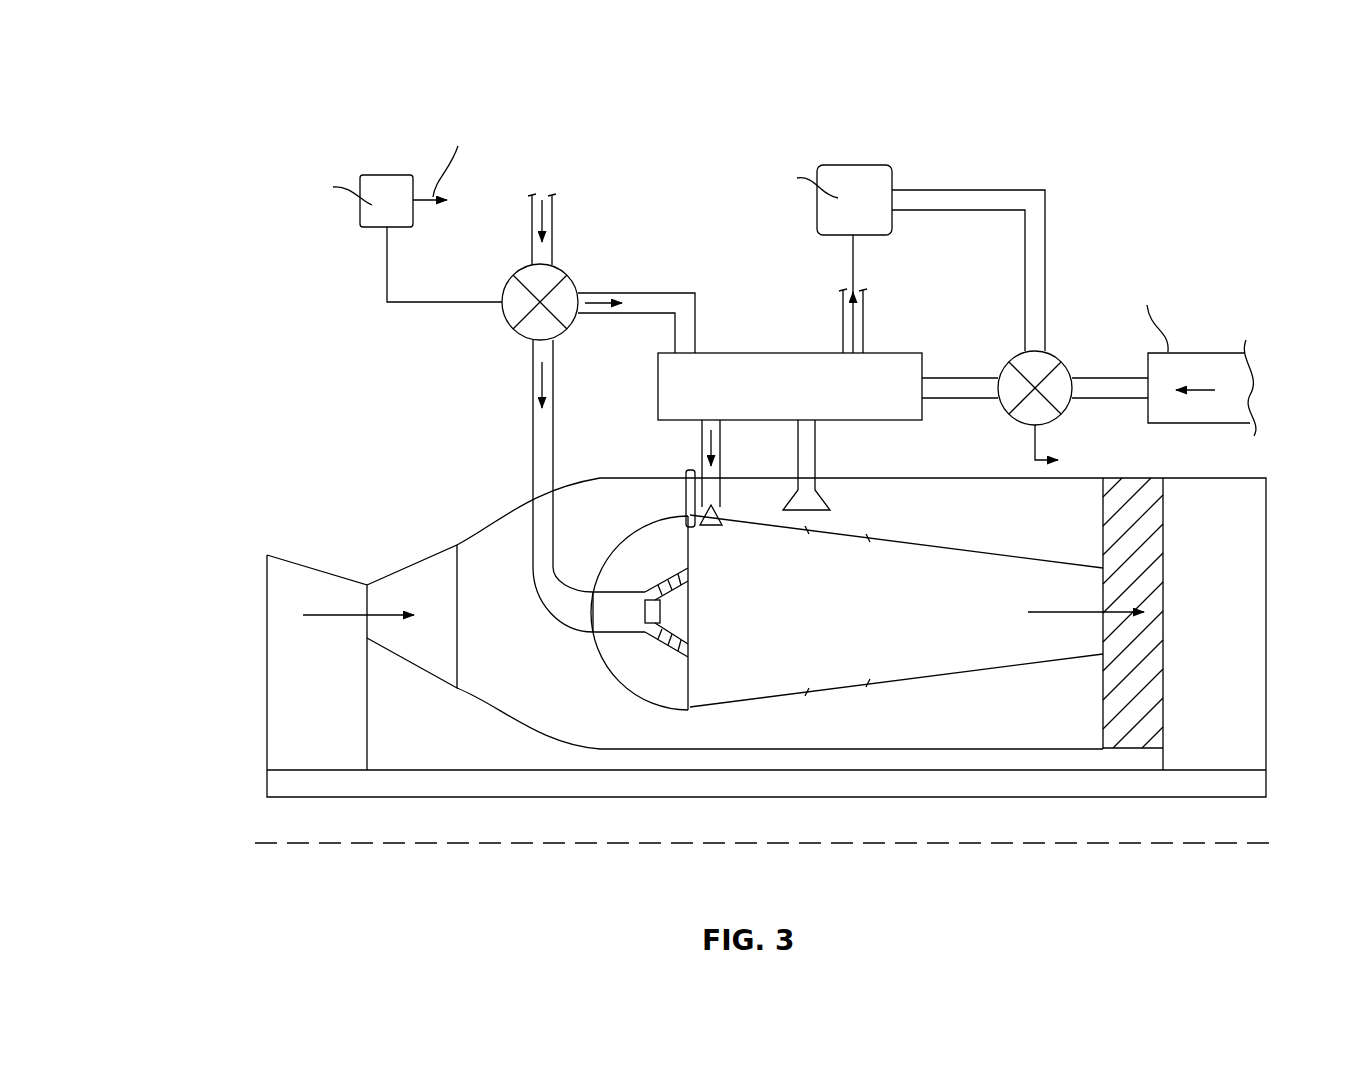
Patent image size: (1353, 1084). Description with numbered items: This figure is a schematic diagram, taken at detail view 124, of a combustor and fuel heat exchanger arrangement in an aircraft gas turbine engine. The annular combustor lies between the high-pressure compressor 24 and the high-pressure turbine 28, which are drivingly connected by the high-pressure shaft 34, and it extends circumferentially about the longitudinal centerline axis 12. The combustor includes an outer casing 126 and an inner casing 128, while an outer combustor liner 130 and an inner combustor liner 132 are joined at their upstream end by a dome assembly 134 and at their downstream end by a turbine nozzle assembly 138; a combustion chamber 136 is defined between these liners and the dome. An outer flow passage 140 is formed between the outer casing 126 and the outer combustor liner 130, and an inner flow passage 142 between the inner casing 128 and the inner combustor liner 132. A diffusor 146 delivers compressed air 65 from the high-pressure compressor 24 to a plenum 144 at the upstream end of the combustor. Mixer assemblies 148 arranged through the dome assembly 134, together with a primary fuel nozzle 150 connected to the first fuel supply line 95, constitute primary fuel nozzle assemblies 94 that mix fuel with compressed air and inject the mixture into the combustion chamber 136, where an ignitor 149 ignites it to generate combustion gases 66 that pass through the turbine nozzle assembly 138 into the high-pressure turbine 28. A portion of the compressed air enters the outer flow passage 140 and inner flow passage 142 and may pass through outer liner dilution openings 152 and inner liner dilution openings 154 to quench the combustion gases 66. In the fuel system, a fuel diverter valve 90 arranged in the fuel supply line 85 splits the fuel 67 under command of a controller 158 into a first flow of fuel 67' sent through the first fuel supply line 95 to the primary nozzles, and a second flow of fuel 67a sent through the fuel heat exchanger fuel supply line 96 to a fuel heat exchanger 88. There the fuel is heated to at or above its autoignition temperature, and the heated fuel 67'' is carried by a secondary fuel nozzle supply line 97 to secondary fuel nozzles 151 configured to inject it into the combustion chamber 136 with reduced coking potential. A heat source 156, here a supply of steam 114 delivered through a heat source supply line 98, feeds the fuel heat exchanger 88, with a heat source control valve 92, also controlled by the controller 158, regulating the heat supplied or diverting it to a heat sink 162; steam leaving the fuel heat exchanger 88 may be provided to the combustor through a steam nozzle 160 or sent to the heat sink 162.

The detail view 124 is at (158, 84).
The controller 158 is at (387, 173).
The fuel supply line 85 is at (556, 210).
The fuel 67 is at (571, 228).
The fuel diverter valve 90 is at (518, 282).
The fuel heat exchanger fuel supply line 96 is at (672, 293).
The second flow of fuel 67a is at (612, 293).
The fuel heat exchanger 88 is at (752, 352).
The heat sink 162 is at (867, 175).
The heat source control valve 92 is at (1010, 362).
The heat source supply line 98 is at (1115, 376).
The heat source 156 is at (1222, 405).
The steam 114 is at (1197, 383).
The high-pressure compressor 24 is at (270, 592).
The high-pressure turbine 28 is at (1252, 720).
The compressed air 65 is at (344, 558).
The diffusor 146 is at (405, 568).
The outer casing 126 is at (500, 508).
The inner casing 128 is at (485, 710).
The turbine nozzle assembly 138 is at (1137, 728).
The longitudinal centerline axis 12 is at (1143, 847).
The high-pressure shaft 34 is at (872, 785).
The first fuel supply line 95 is at (533, 400).
The first flow of fuel 67' is at (582, 391).
The secondary fuel nozzle supply line 97 is at (702, 462).
The heated fuel 67'' is at (751, 447).
The secondary fuel nozzles 151 is at (716, 530).
The ignitor 149 is at (686, 490).
The steam nozzle 160 is at (793, 504).
The dome assembly 134 is at (694, 690).
The mixer assemblies 148 is at (694, 574).
The primary fuel nozzle 150 is at (662, 612).
The outer combustor liner 130 is at (950, 548).
The inner combustor liner 132 is at (955, 673).
The combustion chamber 136 is at (950, 648).
The combustion gases 66 is at (1062, 612).
The primary fuel nozzle assemblies 94 is at (508, 440).
The plenum 144 is at (510, 702).
The outer liner dilution openings 152 is at (851, 526).
The outer flow passage 140 is at (949, 499).
The inner liner dilution openings 154 is at (855, 706).
The inner flow passage 142 is at (900, 728).